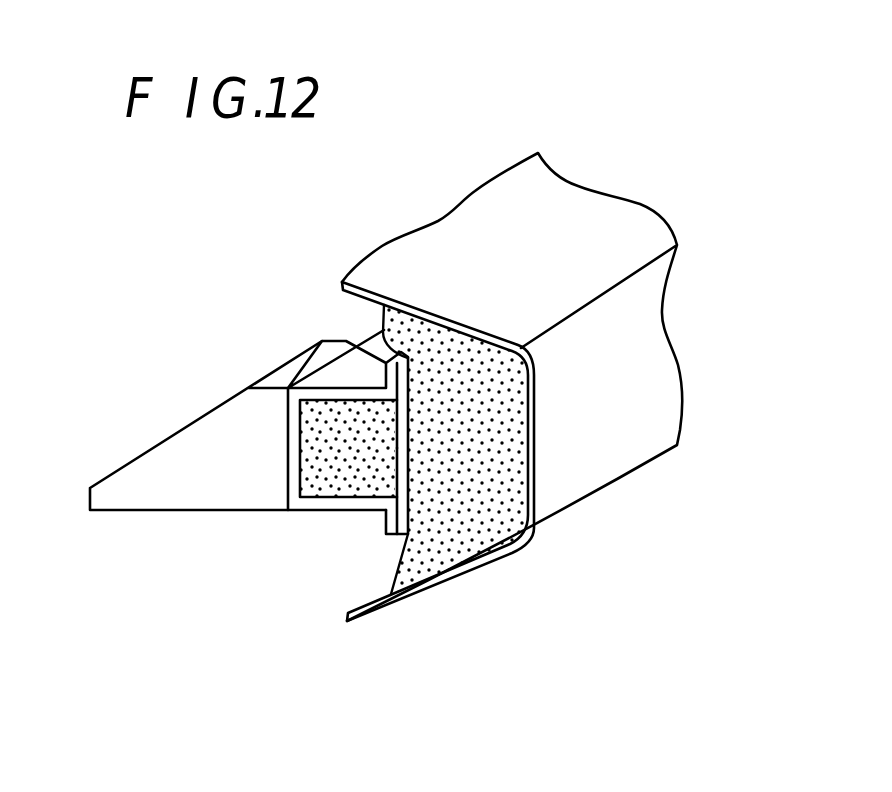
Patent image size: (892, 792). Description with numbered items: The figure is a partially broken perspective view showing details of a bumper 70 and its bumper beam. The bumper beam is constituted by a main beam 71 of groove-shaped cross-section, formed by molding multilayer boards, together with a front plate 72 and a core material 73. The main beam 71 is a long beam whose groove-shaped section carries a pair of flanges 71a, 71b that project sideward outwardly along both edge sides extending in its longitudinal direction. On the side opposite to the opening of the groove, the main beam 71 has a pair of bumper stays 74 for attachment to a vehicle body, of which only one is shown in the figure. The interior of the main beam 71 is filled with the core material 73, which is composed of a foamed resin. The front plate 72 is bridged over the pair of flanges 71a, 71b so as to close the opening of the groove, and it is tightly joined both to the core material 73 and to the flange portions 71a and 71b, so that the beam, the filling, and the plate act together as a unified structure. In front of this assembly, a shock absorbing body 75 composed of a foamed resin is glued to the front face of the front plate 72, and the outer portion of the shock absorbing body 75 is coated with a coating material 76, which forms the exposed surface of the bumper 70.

The bumper 70 is at (243, 289).
The main beam 71 is at (330, 370).
The flange 71a is at (385, 523).
The flange 71b is at (383, 372).
The front plate 72 is at (396, 464).
The core material 73 is at (327, 477).
The bumper stay 74 is at (197, 497).
The shock absorbing body 75 is at (512, 472).
The coating material 76 is at (494, 194).